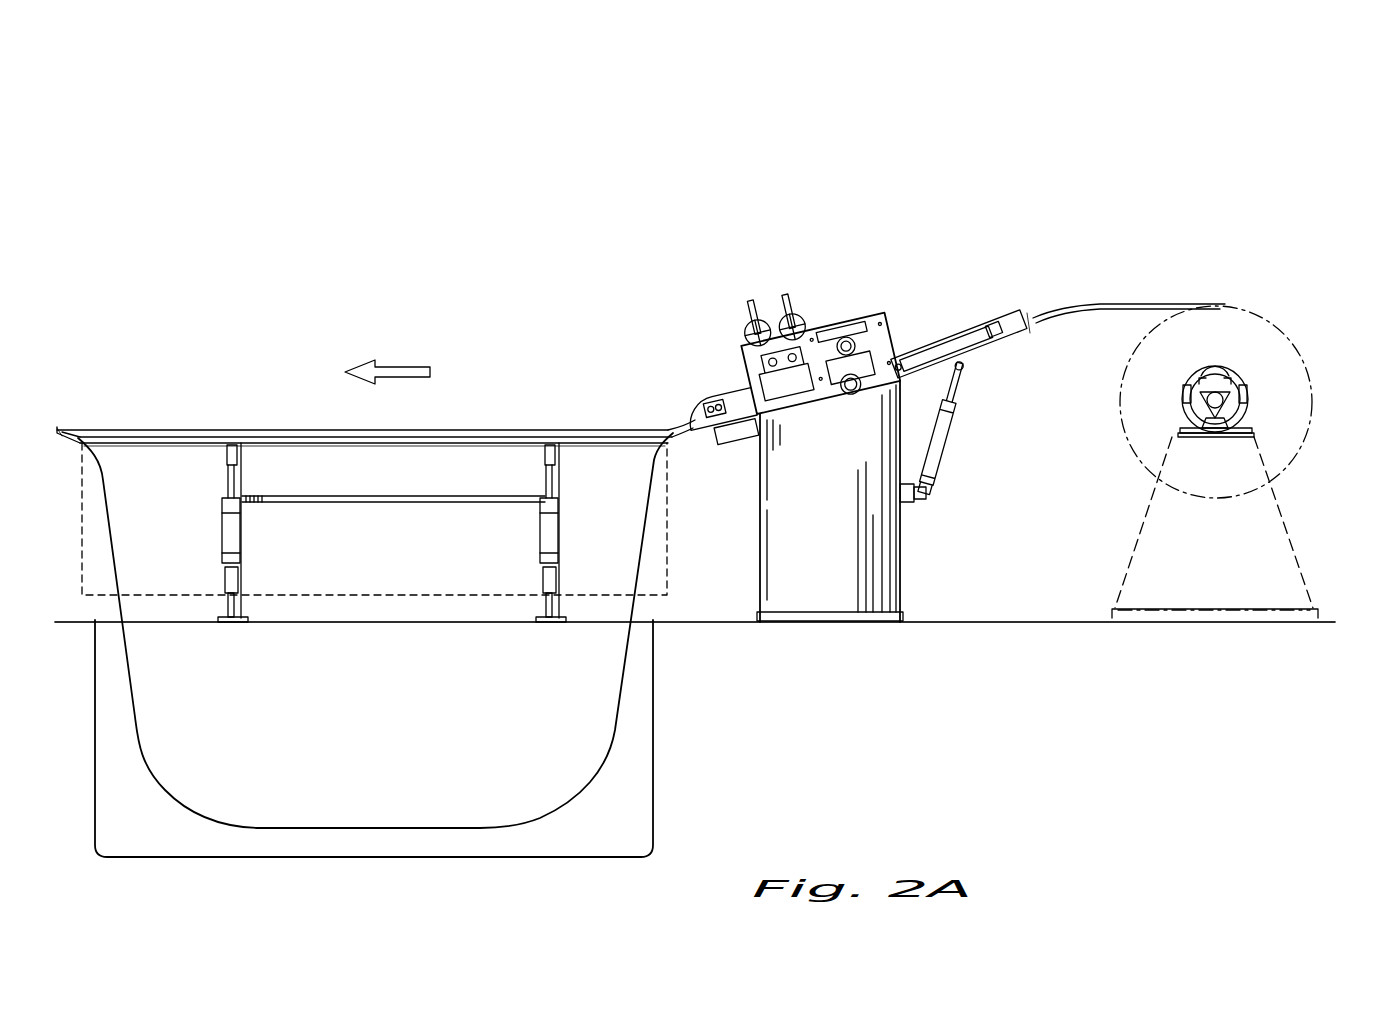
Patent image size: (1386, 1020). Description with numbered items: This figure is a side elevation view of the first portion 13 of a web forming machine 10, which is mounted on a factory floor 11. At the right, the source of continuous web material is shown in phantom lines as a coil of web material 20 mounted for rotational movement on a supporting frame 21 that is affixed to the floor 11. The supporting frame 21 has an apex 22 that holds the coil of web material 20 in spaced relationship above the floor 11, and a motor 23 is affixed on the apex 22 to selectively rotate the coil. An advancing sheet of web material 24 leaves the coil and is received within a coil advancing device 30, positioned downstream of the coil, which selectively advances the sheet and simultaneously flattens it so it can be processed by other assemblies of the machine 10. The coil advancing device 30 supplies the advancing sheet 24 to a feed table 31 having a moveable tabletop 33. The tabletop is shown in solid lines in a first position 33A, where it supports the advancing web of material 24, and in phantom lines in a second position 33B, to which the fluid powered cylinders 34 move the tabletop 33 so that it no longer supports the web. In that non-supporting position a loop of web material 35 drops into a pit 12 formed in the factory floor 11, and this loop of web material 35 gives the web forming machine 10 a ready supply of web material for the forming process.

The web forming machine 10 is at (928, 158).
The factory floor 11 is at (992, 619).
The pit 12 is at (653, 723).
The first portion 13 is at (244, 392).
The coil of web material 20 is at (1290, 388).
The supporting frame 21 is at (1295, 548).
The apex 22 is at (1250, 432).
The motor 23 is at (1215, 400).
The advancing sheet of web material 24 is at (491, 428).
The coil advancing device 30 is at (838, 531).
The feed table 31 is at (215, 410).
The moveable tabletop 33 is at (594, 428).
The tabletop supporting position 33A is at (365, 447).
The tabletop non-supporting position 33B is at (655, 548).
The fluid powered cylinders 34 is at (233, 537).
The loop of web material 35 is at (218, 818).